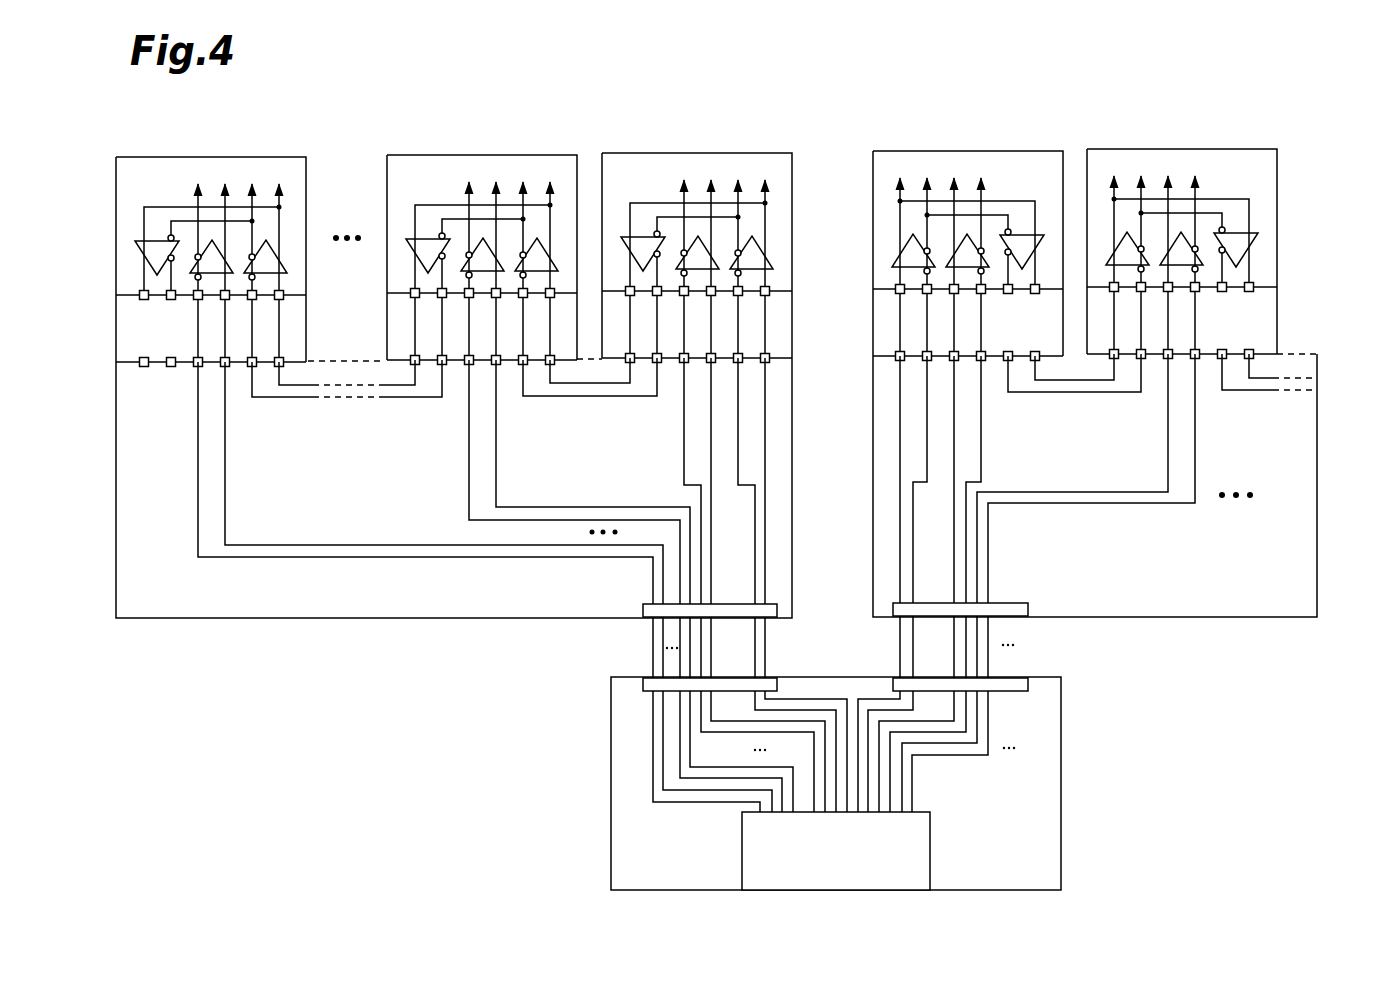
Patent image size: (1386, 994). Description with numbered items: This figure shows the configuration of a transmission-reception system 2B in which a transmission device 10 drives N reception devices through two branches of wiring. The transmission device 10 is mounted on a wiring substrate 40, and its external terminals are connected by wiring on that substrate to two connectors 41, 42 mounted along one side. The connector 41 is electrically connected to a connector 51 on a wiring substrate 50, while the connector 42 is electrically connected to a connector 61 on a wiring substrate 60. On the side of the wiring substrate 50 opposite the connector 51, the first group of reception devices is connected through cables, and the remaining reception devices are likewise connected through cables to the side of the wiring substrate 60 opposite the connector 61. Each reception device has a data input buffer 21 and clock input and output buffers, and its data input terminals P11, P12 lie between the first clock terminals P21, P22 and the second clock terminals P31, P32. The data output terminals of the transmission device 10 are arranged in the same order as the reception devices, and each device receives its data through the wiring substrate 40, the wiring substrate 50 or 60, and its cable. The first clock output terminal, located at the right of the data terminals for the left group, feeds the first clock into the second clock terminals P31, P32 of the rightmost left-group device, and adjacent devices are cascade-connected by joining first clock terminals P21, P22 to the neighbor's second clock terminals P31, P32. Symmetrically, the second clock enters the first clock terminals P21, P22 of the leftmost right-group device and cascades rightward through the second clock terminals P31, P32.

The transmission-reception system 2B is at (291, 764).
The transmission device 10 is at (926, 860).
The data input buffer 21 is at (227, 261).
The wiring substrate 40 is at (632, 828).
The connector 41 is at (648, 686).
The connector 42 is at (1018, 686).
The wiring substrate 50 is at (182, 614).
The connector 51 is at (650, 618).
The wiring substrate 60 is at (1268, 601).
The connector 61 is at (1015, 612).
The data input terminal P11 is at (197, 300).
The data input terminal P12 is at (224, 300).
The first clock terminal P21 is at (143, 300).
The first clock terminal P22 is at (170, 300).
The second clock terminal P31 is at (278, 300).
The second clock terminal P32 is at (251, 300).